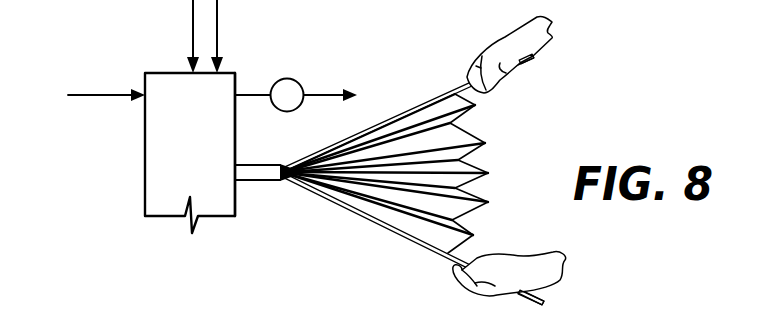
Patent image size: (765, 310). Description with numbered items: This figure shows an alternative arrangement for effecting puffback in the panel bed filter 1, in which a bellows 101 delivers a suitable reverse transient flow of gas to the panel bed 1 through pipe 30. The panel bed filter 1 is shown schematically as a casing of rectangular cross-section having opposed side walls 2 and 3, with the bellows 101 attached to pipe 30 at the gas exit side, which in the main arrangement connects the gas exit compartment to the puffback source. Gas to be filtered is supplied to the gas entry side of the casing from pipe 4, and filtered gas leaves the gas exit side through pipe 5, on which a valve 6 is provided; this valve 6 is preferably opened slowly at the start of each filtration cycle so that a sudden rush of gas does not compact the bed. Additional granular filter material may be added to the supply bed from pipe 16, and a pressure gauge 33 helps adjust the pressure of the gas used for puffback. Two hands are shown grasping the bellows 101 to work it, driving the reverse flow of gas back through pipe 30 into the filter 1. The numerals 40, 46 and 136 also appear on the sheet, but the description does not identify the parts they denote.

The panel bed filter 1 is at (122, 178).
The side wall 2 is at (236, 120).
The side wall 3 is at (145, 152).
The pipe 4 is at (108, 92).
The pipe 5 is at (253, 93).
The valve 6 is at (298, 81).
The pipe 16 is at (193, 25).
The pipe 30 is at (259, 183).
The pressure gauge 33 is at (218, 14).
The element 40 is at (404, 4).
The element 46 is at (613, 0).
The bellows 101 is at (386, 232).
The element 136 is at (120, 307).